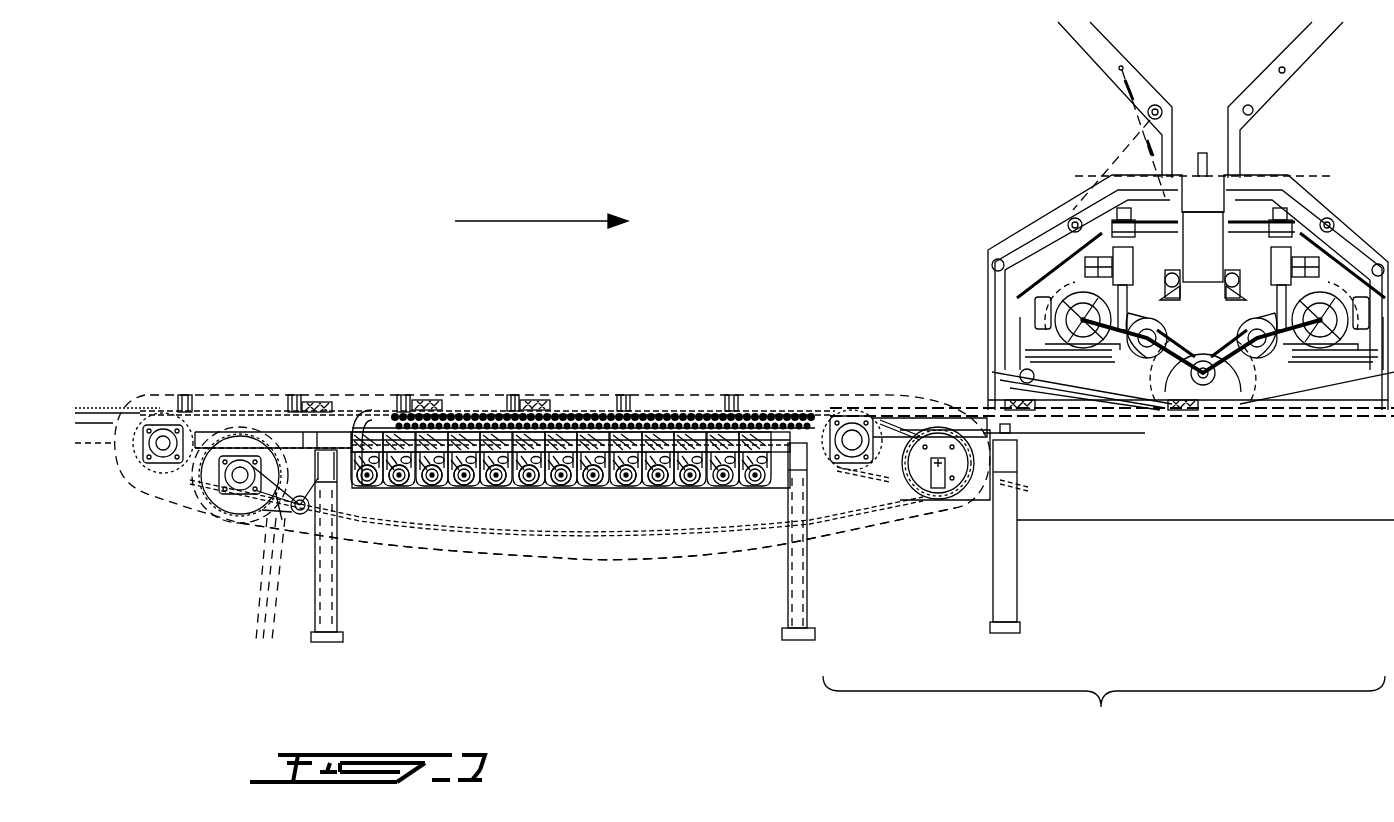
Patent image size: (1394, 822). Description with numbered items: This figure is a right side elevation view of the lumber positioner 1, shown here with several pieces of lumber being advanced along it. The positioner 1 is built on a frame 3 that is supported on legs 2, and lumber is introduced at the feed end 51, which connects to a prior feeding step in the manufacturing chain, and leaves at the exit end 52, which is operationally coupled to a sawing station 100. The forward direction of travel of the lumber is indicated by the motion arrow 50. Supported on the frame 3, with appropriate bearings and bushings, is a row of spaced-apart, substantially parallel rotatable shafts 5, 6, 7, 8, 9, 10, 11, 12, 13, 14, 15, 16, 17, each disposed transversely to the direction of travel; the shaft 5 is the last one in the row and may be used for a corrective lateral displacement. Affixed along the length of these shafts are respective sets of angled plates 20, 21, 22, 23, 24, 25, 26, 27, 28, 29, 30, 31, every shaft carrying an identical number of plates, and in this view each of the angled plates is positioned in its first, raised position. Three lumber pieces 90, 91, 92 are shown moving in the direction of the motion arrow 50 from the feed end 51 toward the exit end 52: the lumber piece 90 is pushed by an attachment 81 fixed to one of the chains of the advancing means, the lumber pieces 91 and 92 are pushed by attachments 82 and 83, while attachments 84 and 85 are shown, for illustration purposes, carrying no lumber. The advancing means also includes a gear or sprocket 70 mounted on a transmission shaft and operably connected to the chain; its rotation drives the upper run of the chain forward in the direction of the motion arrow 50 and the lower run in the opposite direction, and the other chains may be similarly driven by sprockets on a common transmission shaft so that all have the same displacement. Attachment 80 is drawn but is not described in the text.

The lumber positioner 1 is at (176, 186).
The legs 2 is at (322, 622).
The frame 3 is at (820, 468).
The rotatable shaft 5 is at (792, 515).
The rotatable shaft 6 is at (733, 488).
The rotatable shaft 7 is at (692, 488).
The rotatable shaft 8 is at (660, 488).
The rotatable shaft 9 is at (628, 488).
The rotatable shaft 10 is at (595, 488).
The rotatable shaft 11 is at (563, 488).
The rotatable shaft 12 is at (531, 488).
The rotatable shaft 13 is at (498, 488).
The rotatable shaft 14 is at (466, 488).
The rotatable shaft 15 is at (434, 488).
The rotatable shaft 16 is at (401, 488).
The rotatable shaft 17 is at (369, 488).
The angled plates 20 is at (745, 482).
The angled plates 21 is at (700, 488).
The angled plates 22 is at (668, 488).
The angled plates 23 is at (636, 488).
The angled plates 24 is at (603, 488).
The angled plates 25 is at (571, 488).
The angled plates 26 is at (539, 488).
The angled plates 27 is at (506, 488).
The angled plates 28 is at (474, 488).
The angled plates 29 is at (442, 488).
The angled plates 30 is at (409, 488).
The angled plates 31 is at (377, 488).
The motion arrow 50 is at (541, 207).
The feed end 51 is at (100, 340).
The exit end 52 is at (927, 335).
The sprocket 70 is at (955, 497).
The sensor 80 is at (185, 395).
The attachment 81 is at (293, 395).
The attachment 82 is at (404, 395).
The attachment 83 is at (512, 395).
The attachment 84 is at (623, 395).
The attachment 85 is at (730, 395).
The lumber piece 90 is at (312, 402).
The lumber piece 91 is at (426, 400).
The lumber piece 92 is at (540, 400).
The sawing station 100 is at (1108, 629).